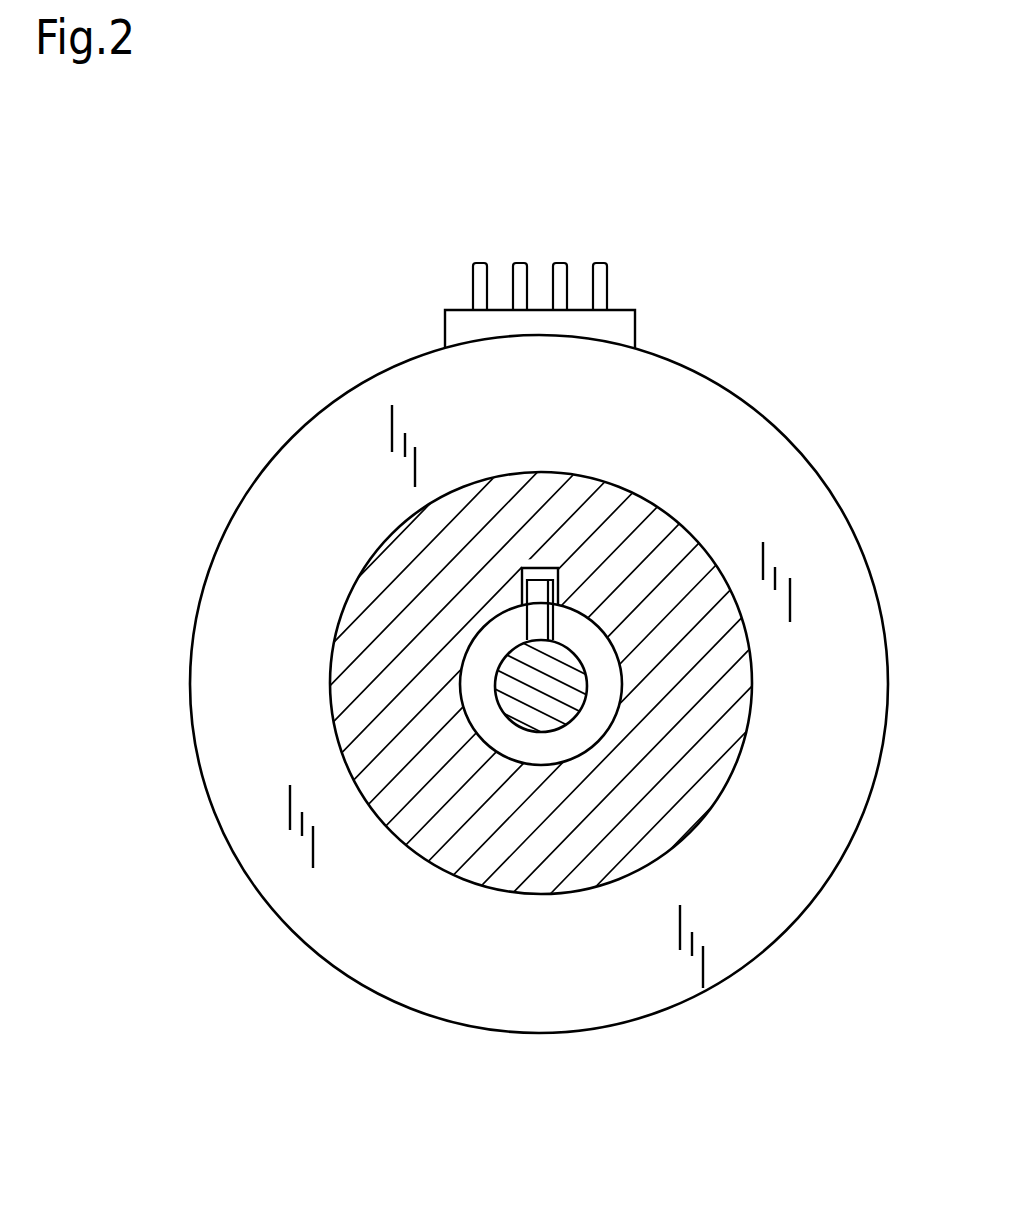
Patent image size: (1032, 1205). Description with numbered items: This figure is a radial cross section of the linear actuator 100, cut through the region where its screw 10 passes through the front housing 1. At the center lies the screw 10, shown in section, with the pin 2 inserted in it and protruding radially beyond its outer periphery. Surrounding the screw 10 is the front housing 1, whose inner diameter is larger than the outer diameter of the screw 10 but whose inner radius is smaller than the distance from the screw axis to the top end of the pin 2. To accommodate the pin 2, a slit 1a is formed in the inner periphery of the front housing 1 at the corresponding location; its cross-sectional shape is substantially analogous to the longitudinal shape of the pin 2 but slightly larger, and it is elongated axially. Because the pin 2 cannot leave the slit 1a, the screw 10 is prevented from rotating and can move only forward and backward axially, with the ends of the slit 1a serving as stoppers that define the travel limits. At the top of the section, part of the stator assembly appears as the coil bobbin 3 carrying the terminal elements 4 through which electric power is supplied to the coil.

The linear actuator 100 is at (213, 193).
The front housing 1 is at (465, 850).
The slit 1a is at (558, 576).
The pin 2 is at (535, 617).
The coil bobbin 3 is at (462, 327).
The terminal elements 4 is at (558, 263).
The screw 10 is at (530, 683).